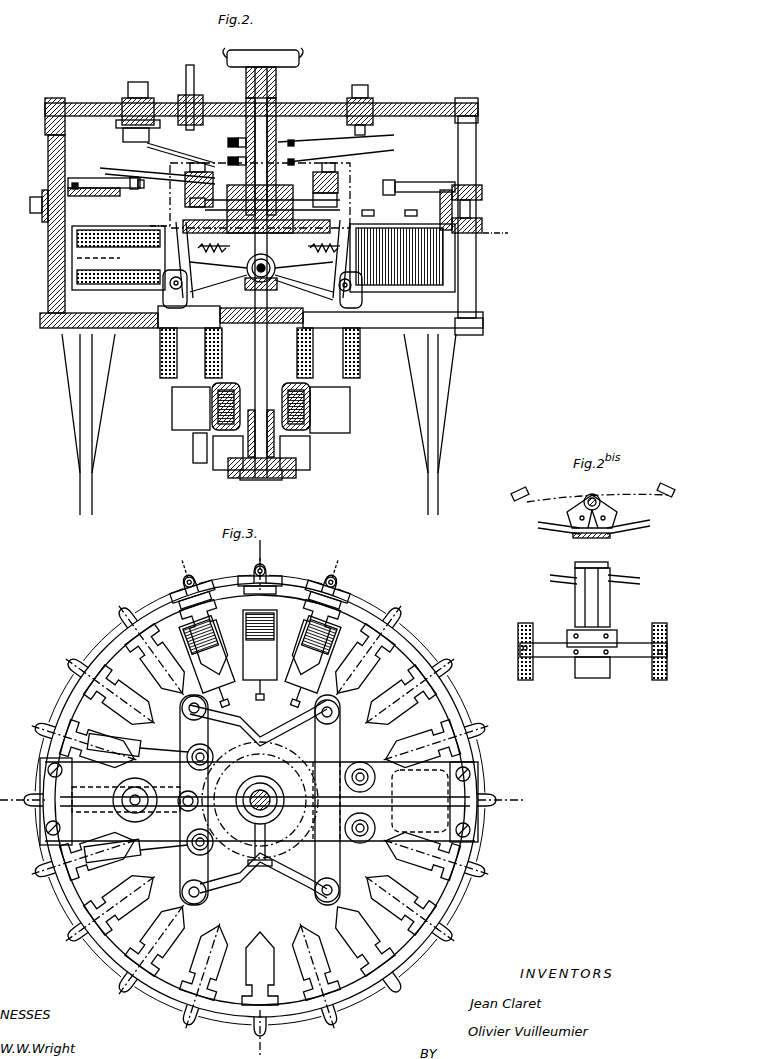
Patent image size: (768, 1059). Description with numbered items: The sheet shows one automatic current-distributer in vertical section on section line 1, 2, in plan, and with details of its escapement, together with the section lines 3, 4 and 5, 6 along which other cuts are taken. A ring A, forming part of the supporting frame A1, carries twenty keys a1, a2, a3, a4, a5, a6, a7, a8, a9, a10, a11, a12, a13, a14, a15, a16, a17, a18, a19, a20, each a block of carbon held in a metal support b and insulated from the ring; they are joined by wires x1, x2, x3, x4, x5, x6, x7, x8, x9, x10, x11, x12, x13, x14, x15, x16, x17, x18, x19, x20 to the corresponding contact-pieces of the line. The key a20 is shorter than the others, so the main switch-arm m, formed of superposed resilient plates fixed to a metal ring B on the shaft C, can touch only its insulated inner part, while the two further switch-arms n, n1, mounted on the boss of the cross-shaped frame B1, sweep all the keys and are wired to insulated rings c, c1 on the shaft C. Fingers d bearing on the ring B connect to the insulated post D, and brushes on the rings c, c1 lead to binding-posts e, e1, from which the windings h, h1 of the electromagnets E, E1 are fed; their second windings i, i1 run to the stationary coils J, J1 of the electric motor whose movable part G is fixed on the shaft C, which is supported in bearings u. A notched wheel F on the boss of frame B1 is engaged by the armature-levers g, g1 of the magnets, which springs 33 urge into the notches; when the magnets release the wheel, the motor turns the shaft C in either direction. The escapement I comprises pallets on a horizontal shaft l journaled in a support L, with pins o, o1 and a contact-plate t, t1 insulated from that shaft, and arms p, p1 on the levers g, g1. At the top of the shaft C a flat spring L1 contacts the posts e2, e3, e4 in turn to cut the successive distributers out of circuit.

In FIG. 2, the ring A is at (255, 216).
In FIG. 3, the ring A is at (260, 800).
In FIG. 2, the frame A1 is at (259, 424).
In FIG. 2, the metal ring B is at (260, 198).
In FIG. 2, the cross-shaped frame B1 is at (338, 186).
In FIG. 3, the cross-shaped frame B1 is at (260, 798).
In FIG. 2, the shaft C is at (261, 272).
In FIG. 3, the shaft C is at (260, 800).
In FIG. 2, the insulated post D is at (138, 105).
In FIG. 3, the insulated post D is at (135, 804).
In FIG. 2, the electromagnet E is at (118, 258).
In FIG. 2, the electromagnet E1 is at (402, 258).
In FIG. 2, the notched wheel F is at (189, 260).
In FIG. 2, the movable part of motor G is at (251, 431).
In FIG. 2, the escapement I is at (304, 259).
In FIG. 2bis, the escapement I is at (607, 540).
In FIG. 2, the stationary portion of motor J is at (191, 379).
In FIG. 2, the stationary portion of motor J1 is at (328, 380).
In FIG. 2bis, the support L is at (592, 608).
In FIG. 2, the flat spring L1 is at (263, 66).
In FIG. 3, the flat spring L1 is at (265, 848).
In FIG. 2, the key a5 is at (433, 184).
In FIG. 3, the key a5 is at (420, 801).
In FIG. 2, the key a15 is at (86, 178).
In FIG. 3, the key a1 is at (312, 639).
In FIG. 3, the key a2 is at (359, 664).
In FIG. 3, the key a3 is at (396, 701).
In FIG. 3, the key a4 is at (420, 748).
In FIG. 3, the key a6 is at (420, 852).
In FIG. 3, the key a7 is at (396, 899).
In FIG. 3, the key a8 is at (359, 936).
In FIG. 3, the key a9 is at (312, 960).
In FIG. 3, the key a10 is at (260, 968).
In FIG. 3, the key a11 is at (208, 960).
In FIG. 3, the key a12 is at (161, 936).
In FIG. 3, the key a13 is at (124, 899).
In FIG. 3, the key a14 is at (99, 852).
In FIG. 3, the key a16 is at (99, 748).
In FIG. 3, the key a17 is at (124, 701).
In FIG. 3, the key a18 is at (161, 664).
In FIG. 3, the key a19 is at (208, 639).
In FIG. 3, the key a20 is at (257, 655).
In FIG. 2, the metal support b is at (279, 209).
In FIG. 2, the ring c is at (231, 138).
In FIG. 2, the ring c1 is at (230, 156).
In FIG. 2, the finger d is at (181, 151).
In FIG. 2, the binding-post e is at (357, 96).
In FIG. 3, the binding-post e is at (365, 777).
In FIG. 2, the binding-post e1 is at (363, 101).
In FIG. 3, the binding-post e1 is at (369, 828).
In FIG. 2, the post e2 is at (186, 97).
In FIG. 3, the post e2 is at (203, 809).
In FIG. 3, the post e3 is at (206, 733).
In FIG. 3, the post e4 is at (206, 866).
In FIG. 2, the armature-lever g is at (212, 242).
In FIG. 2, the armature-lever g1 is at (326, 259).
In FIG. 2, the winding h is at (88, 204).
In FIG. 2, the winding h1 is at (406, 218).
In FIG. 2, the winding i is at (152, 218).
In FIG. 2, the winding i1 is at (365, 218).
In FIG. 2, the horizontal shaft l is at (258, 271).
In FIG. 2bis, the horizontal shaft l is at (623, 611).
In FIG. 2, the main switch-arm m is at (157, 171).
In FIG. 3, the main switch-arm m is at (126, 792).
In FIG. 3, the switch-arm n is at (136, 851).
In FIG. 3, the switch-arm n1 is at (137, 745).
In FIG. 2, the pin o is at (218, 278).
In FIG. 2bis, the pin o is at (561, 539).
In FIG. 2, the pin o1 is at (304, 282).
In FIG. 2bis, the pin o1 is at (632, 536).
In FIG. 2, the arm p is at (218, 285).
In FIG. 2bis, the arm p is at (559, 563).
In FIG. 2, the arm p1 is at (304, 290).
In FIG. 2bis, the arm p1 is at (632, 560).
In FIG. 2, the contact-plate t is at (168, 290).
In FIG. 2bis, the contact-plate t is at (590, 578).
In FIG. 2, the contact-plate t1 is at (362, 290).
In FIG. 2bis, the contact-plate t1 is at (669, 577).
In FIG. 2, the bearing u is at (336, 145).
In FIG. 2, the springs 33 is at (270, 259).
In FIG. 3, the section line 1 is at (24, 800).
In FIG. 3, the section line 2 is at (504, 791).
In FIG. 3, the section line 3 is at (254, 565).
In FIG. 3, the section line 4 is at (253, 1034).
In FIG. 2, the section line 5 is at (46, 222).
In FIG. 2, the section line 6 is at (495, 226).
In FIG. 3, the wire x1 is at (339, 576).
In FIG. 3, the wire x2 is at (402, 608).
In FIG. 3, the wire x3 is at (455, 661).
In FIG. 3, the wire x4 is at (487, 726).
In FIG. 3, the wire x5 is at (494, 804).
In FIG. 3, the wire x6 is at (487, 874).
In FIG. 3, the wire x7 is at (455, 941).
In FIG. 3, the wire x8 is at (400, 994).
In FIG. 3, the wire x9 is at (333, 1027).
In FIG. 3, the wire x10 is at (271, 1030).
In FIG. 3, the wire x11 is at (186, 1028).
In FIG. 3, the wire x12 is at (120, 994).
In FIG. 3, the wire x13 is at (67, 941).
In FIG. 3, the wire x14 is at (35, 876).
In FIG. 3, the wire x15 is at (26, 791).
In FIG. 3, the wire x16 is at (35, 727).
In FIG. 3, the wire x17 is at (67, 661).
In FIG. 3, the wire x18 is at (120, 606).
In FIG. 3, the wire x19 is at (196, 572).
In FIG. 3, the wire x20 is at (268, 570).